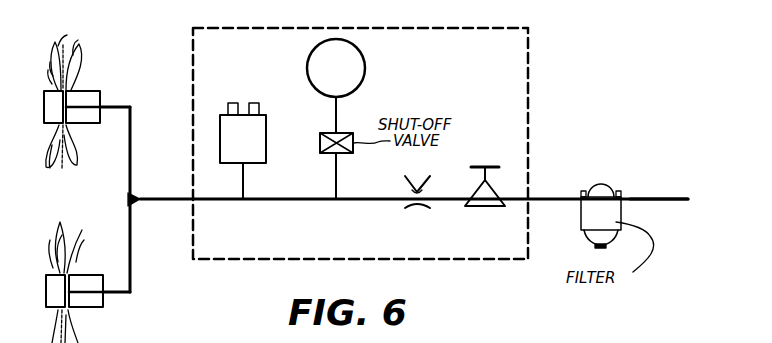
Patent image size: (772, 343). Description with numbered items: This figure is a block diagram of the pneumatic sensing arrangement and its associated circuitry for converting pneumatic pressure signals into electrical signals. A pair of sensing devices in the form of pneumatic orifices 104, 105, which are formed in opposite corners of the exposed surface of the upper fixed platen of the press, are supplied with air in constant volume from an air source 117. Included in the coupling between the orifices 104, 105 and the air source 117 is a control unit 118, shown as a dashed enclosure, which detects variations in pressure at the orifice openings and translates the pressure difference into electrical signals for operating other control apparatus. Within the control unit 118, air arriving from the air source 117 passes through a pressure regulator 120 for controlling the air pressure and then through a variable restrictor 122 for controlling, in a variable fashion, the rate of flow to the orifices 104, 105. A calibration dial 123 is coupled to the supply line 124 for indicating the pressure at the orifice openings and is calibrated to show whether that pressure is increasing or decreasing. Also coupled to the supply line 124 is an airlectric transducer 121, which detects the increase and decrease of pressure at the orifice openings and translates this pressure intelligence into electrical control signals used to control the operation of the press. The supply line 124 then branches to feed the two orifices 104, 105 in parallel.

The pneumatic orifice 104 is at (70, 107).
The pneumatic orifice 105 is at (70, 290).
The air source 117 is at (667, 197).
The control unit 118 is at (529, 97).
The pressure regulator 120 is at (485, 206).
The airlectric transducer 121 is at (258, 125).
The variable restrictor 122 is at (412, 206).
The calibration dial 123 is at (411, 70).
The supply line 124 is at (233, 207).